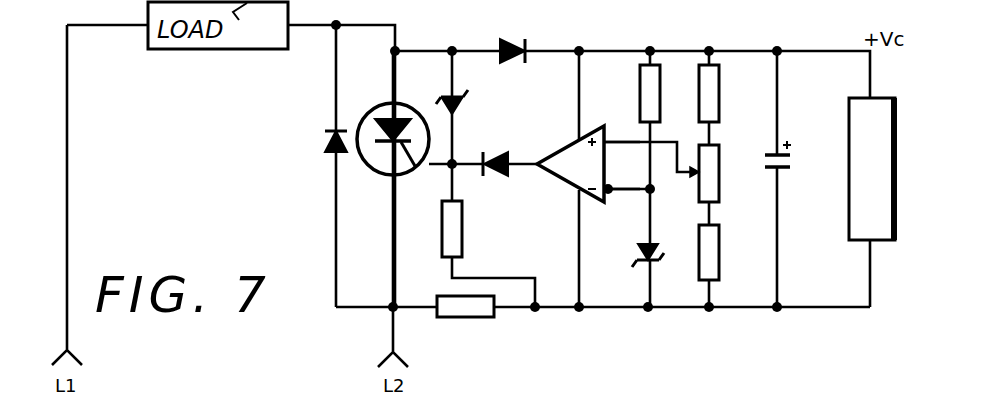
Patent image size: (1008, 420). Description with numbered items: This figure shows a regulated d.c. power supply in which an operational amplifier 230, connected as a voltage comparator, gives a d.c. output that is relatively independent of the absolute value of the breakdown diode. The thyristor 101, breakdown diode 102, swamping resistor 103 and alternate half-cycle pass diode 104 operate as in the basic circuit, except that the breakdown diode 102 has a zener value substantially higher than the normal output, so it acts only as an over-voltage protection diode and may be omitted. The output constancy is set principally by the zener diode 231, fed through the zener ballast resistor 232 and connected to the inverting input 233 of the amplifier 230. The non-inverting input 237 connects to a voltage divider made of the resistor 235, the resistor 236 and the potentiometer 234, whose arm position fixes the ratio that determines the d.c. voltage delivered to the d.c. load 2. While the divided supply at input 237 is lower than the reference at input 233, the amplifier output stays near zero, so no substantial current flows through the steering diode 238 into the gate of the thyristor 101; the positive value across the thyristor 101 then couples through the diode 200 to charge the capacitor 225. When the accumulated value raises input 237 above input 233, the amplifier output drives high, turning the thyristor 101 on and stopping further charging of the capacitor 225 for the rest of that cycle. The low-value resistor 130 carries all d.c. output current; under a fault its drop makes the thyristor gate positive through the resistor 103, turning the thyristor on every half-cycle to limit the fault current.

The d.c. load 2 is at (893, 134).
The thyristor 101 is at (378, 118).
The breakdown diode 102 is at (466, 107).
The swamping resistor 103 is at (442, 235).
The alternate half-cycle pass diode 104 is at (318, 140).
The resistor 130 is at (456, 311).
The diode 200 is at (530, 48).
The capacitor 225 is at (792, 158).
The operational amplifier 230 is at (582, 180).
The zener diode 231 is at (657, 272).
The zener ballast resistor 232 is at (642, 104).
The inverting input 233 is at (628, 207).
The potentiometer 234 is at (718, 160).
The resistor 235 is at (719, 102).
The resistor 236 is at (714, 273).
The non-inverting input 237 is at (622, 118).
The steering diode 238 is at (520, 144).